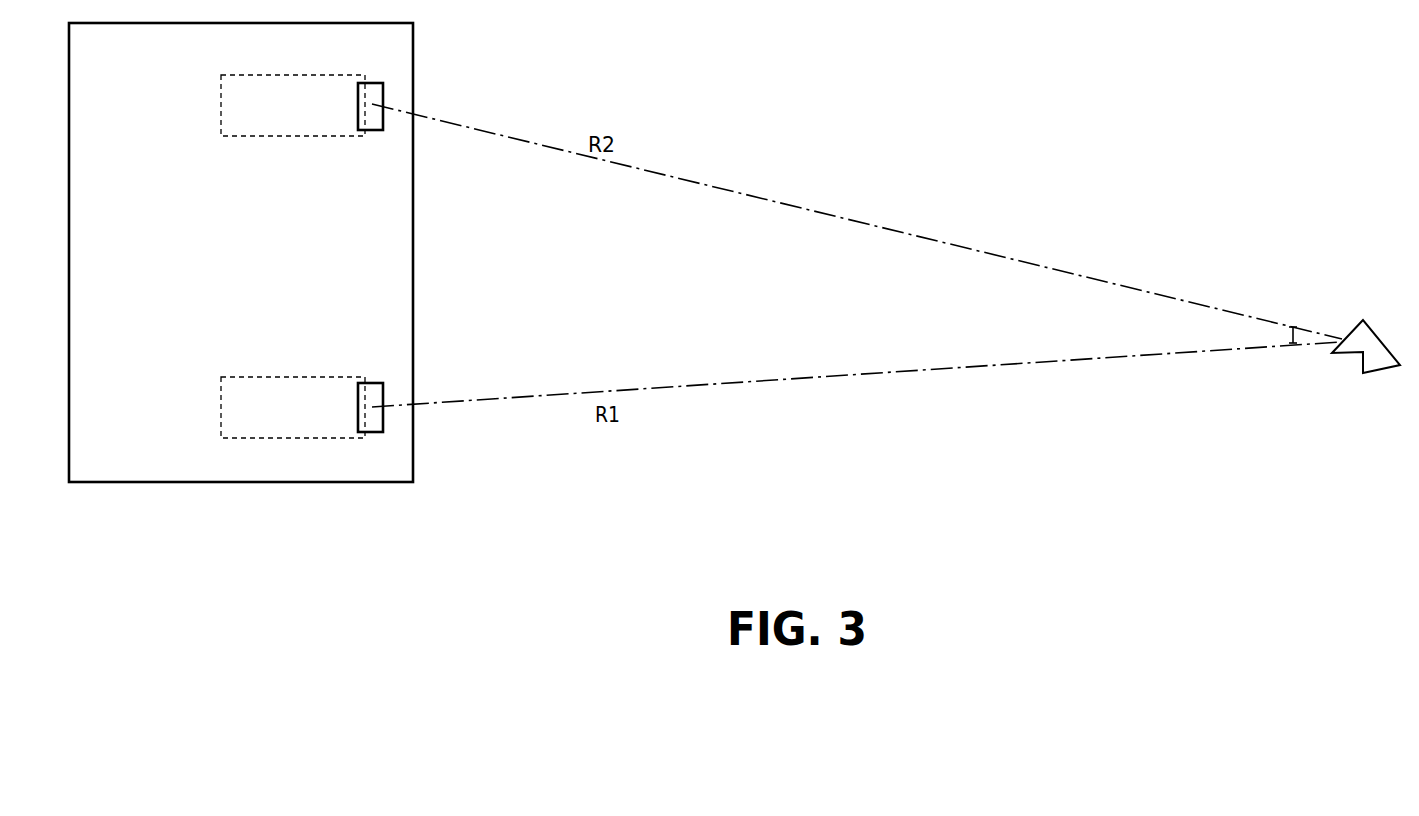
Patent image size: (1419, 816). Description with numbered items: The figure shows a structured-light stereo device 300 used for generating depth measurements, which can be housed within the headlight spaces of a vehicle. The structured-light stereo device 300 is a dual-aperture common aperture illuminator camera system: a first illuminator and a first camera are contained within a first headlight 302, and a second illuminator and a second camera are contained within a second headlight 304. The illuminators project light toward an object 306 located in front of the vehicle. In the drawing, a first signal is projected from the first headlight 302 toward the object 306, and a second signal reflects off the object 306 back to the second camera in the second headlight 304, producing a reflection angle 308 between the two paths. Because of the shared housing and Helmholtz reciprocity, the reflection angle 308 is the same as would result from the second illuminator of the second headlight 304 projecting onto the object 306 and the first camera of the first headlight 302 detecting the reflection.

The structured-light stereo device 300 is at (124, 259).
The first headlight 302 is at (303, 377).
The second headlight 304 is at (288, 136).
The object 306 is at (1380, 338).
The reflection angle 308 is at (1293, 340).